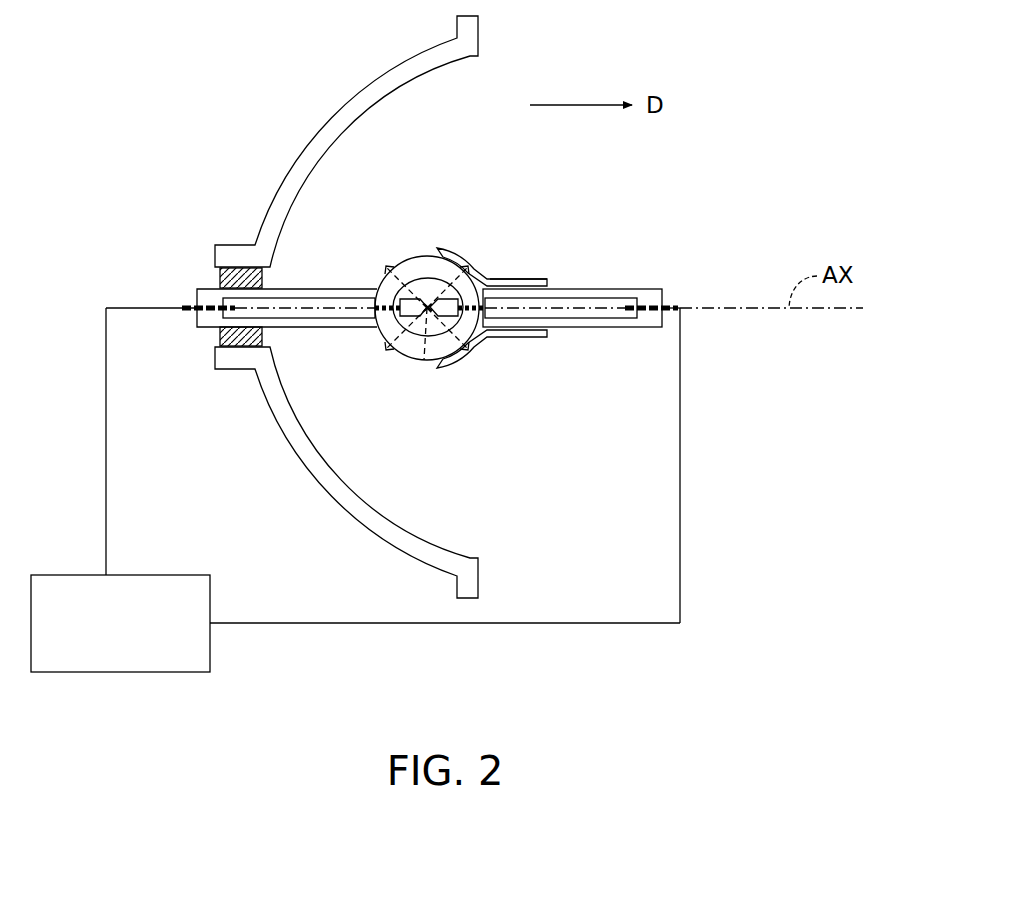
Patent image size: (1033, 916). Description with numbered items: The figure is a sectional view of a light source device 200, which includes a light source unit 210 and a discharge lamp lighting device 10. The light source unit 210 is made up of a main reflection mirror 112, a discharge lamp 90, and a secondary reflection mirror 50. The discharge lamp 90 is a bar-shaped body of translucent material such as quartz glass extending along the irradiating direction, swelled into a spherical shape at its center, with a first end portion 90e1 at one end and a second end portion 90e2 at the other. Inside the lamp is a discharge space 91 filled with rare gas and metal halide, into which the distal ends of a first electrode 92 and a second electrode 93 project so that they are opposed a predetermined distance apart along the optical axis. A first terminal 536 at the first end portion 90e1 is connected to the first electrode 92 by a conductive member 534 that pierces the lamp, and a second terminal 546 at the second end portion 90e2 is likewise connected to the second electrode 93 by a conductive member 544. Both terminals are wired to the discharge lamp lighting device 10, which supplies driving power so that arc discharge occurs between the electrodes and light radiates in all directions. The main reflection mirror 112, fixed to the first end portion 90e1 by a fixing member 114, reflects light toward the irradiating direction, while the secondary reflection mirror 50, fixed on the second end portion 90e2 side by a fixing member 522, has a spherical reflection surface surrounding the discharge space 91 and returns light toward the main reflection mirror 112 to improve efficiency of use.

The light source device 200 is at (781, 53).
The light source unit 210 is at (236, 104).
The main reflection mirror 112 is at (341, 110).
The fixing member 114 is at (219, 275).
The discharge lamp 90 is at (416, 257).
The discharge space 91 is at (425, 337).
The first electrode 92 is at (383, 335).
The second electrode 93 is at (470, 340).
The secondary reflection mirror 50 is at (447, 250).
The fixing member 522 is at (552, 284).
The first end portion 90e1 is at (208, 288).
The second end portion 90e2 is at (636, 289).
The conductive member 534 is at (308, 318).
The first terminal 536 is at (190, 312).
The conductive member 544 is at (573, 318).
The second terminal 546 is at (669, 312).
The discharge lamp lighting device 10 is at (152, 575).